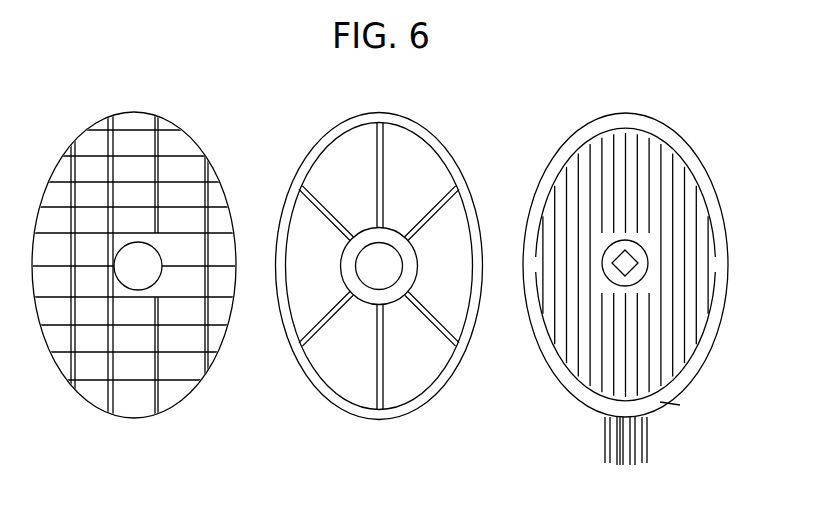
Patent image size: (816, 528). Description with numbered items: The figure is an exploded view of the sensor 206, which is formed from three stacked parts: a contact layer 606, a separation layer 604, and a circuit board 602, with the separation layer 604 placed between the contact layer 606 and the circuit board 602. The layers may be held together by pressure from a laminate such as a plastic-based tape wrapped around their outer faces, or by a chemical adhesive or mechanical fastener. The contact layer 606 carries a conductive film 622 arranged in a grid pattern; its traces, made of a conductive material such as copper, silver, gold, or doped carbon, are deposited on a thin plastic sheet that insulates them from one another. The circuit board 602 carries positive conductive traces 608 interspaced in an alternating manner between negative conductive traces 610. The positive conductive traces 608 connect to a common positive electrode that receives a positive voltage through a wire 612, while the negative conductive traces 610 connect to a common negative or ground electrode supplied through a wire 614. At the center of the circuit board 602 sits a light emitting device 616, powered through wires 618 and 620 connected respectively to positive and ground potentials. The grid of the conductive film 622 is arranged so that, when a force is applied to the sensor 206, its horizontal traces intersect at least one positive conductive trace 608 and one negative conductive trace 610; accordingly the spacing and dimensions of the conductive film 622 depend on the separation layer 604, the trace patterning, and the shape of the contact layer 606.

The sensor 206 is at (588, 59).
The circuit board 602 is at (642, 115).
The separation layer 604 is at (391, 114).
The contact layer 606 is at (167, 121).
The positive conductive traces 608 is at (701, 164).
The negative conductive traces 610 is at (662, 402).
The wire 612 is at (644, 463).
The wire 614 is at (634, 466).
The light emitting device 616 is at (648, 263).
The wire 618 is at (606, 463).
The wire 620 is at (617, 466).
The conductive film 622 is at (108, 142).